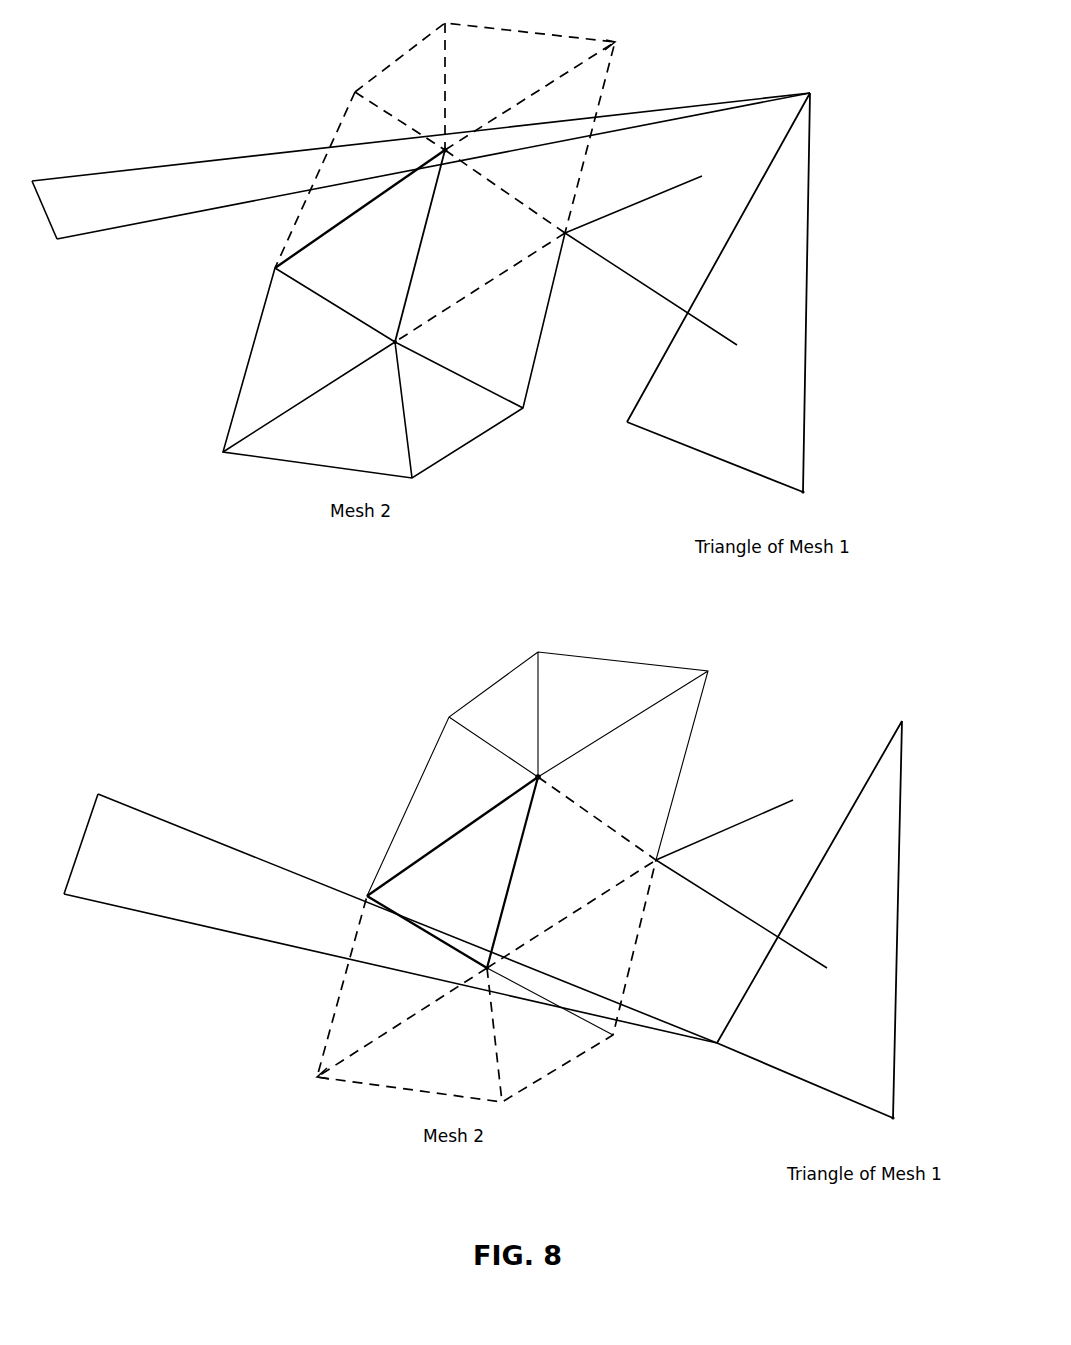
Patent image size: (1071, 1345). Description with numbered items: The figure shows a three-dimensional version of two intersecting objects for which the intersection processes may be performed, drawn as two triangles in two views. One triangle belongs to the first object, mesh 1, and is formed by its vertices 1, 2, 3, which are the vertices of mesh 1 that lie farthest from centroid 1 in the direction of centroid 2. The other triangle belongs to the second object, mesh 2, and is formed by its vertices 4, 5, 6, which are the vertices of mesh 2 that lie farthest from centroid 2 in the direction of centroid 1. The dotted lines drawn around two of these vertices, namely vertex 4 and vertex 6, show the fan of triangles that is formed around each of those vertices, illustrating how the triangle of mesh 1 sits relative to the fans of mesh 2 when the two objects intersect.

The mesh 1 is at (790, 599).
The mesh 2 is at (737, 766).
The vertex V[I3] of triangle of mesh 1 3 is at (851, 823).
The vertex V[I4] of mesh 2 4 is at (488, 555).
The vertex V[I5] of mesh 2 5 is at (386, 559).
The vertex V[I6] of mesh 2 6 is at (448, 670).